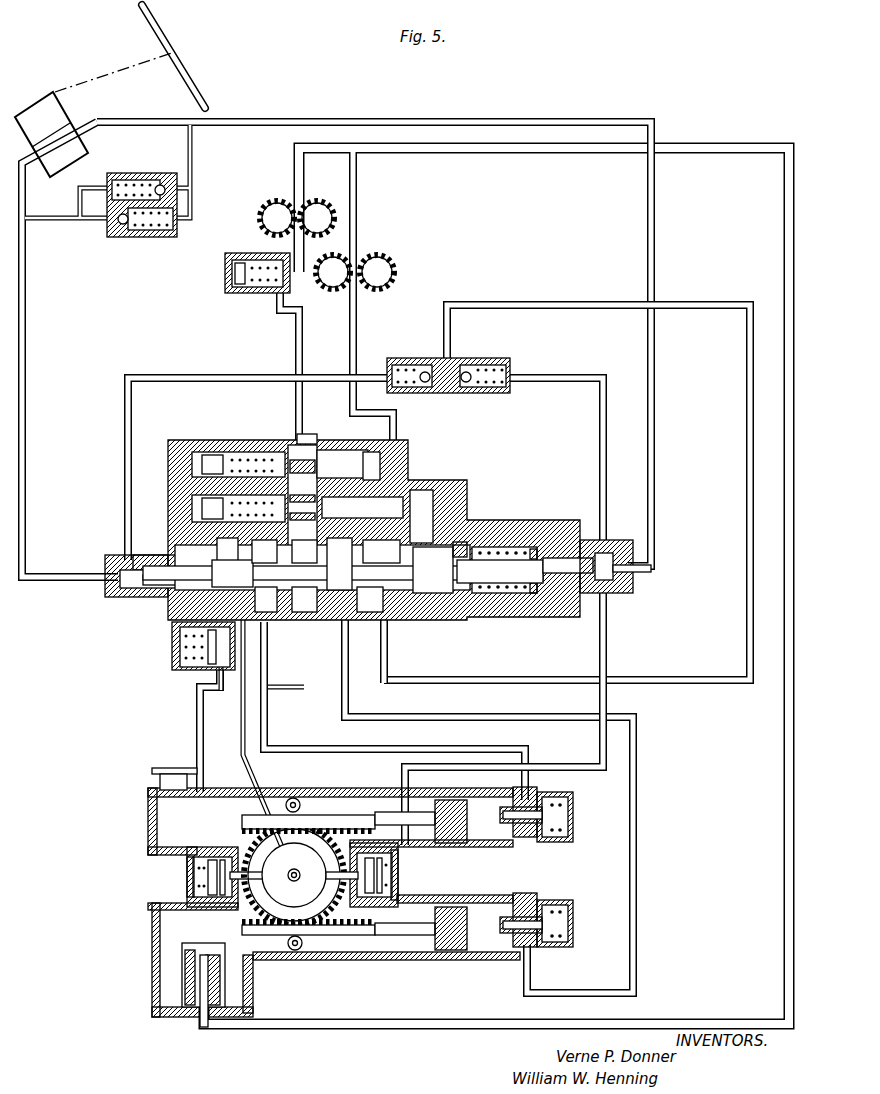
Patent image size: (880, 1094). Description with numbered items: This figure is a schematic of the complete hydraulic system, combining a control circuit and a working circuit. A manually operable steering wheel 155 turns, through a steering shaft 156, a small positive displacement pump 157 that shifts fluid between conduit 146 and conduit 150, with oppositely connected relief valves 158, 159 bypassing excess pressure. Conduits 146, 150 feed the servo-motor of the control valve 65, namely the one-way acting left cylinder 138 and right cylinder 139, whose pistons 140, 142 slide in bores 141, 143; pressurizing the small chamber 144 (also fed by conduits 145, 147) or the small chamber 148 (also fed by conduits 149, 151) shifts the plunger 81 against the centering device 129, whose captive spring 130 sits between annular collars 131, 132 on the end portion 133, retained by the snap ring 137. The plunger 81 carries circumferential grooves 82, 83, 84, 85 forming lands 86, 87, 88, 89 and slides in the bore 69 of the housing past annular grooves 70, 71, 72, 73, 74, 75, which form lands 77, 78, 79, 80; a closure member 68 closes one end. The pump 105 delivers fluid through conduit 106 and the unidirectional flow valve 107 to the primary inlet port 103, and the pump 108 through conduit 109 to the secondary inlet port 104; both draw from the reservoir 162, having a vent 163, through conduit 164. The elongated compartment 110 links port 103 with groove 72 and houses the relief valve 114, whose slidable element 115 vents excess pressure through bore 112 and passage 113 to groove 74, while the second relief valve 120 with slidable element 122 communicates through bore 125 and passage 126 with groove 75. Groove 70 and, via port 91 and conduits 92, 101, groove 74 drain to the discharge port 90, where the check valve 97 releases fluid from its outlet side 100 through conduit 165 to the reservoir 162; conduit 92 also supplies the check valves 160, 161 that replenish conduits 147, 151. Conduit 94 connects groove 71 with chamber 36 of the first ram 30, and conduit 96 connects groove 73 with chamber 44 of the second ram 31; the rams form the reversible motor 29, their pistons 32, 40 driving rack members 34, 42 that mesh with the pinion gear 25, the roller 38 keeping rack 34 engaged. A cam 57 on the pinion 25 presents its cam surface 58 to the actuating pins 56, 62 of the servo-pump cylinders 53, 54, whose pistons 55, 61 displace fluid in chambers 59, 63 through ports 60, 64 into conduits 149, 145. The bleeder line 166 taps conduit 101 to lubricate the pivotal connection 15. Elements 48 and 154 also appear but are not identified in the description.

The pivotal connection 15 is at (111, 897).
The pinion gear 25 is at (352, 927).
The fluid powered reversible motor 29 is at (556, 876).
The first single-acting ram 30 is at (586, 813).
The second single-acting ram 31 is at (586, 916).
The piston 32 is at (468, 812).
The first rack member 34 is at (355, 818).
The chamber 36 is at (506, 842).
The roller 38 is at (300, 800).
The piston 40 is at (299, 950).
The second rack member 42 is at (365, 935).
The chamber 44 is at (490, 950).
The spring 48 is at (571, 968).
The left cylinder 53 is at (408, 885).
The right cylinder 54 is at (182, 896).
The reciprocable piston 55 is at (355, 897).
The actuating pin 56 is at (340, 870).
The cam 57 is at (294, 875).
The cam surface 58 is at (294, 875).
The chamber 59 is at (390, 897).
The port 60 is at (400, 868).
The reciprocable piston 61 is at (213, 858).
The actuating pin 62 is at (232, 880).
The chamber 63 is at (192, 850).
The port 64 is at (188, 872).
The control valve 65 is at (455, 472).
The closure member 68 is at (490, 520).
The longitudinally disposed bore 69 is at (470, 540).
The first annular groove 70 is at (228, 550).
The second annular groove 71 is at (264, 551).
The third annular groove 72 is at (304, 551).
The fourth annular groove 73 is at (350, 545).
The fifth annular groove 74 is at (372, 545).
The sixth annular groove 75 is at (433, 570).
The land 77 is at (266, 599).
The land 78 is at (304, 599).
The land 79 is at (370, 599).
The land 80 is at (425, 612).
The movable valve member or plunger 81 is at (447, 612).
The first circumferential groove 82 is at (232, 573).
The second circumferential groove 83 is at (311, 575).
The third circumferential groove 84 is at (339, 564).
The fourth circumferential groove 85 is at (384, 560).
The land 86 is at (265, 573).
The land 87 is at (305, 612).
The land 88 is at (421, 516).
The land 89 is at (500, 571).
The discharge port 90 is at (221, 690).
The port 91 is at (388, 662).
The laterally extending conduit 92 is at (746, 614).
The conduit 94 is at (266, 638).
The conduit 96 is at (349, 650).
The check valve 97 is at (185, 668).
The outlet side 100 is at (208, 670).
The conduit 101 is at (247, 675).
The primary inlet port 103 is at (305, 434).
The secondary inlet port 104 is at (410, 445).
The pump 105 is at (262, 205).
The conduit 106 is at (295, 346).
The unidirectional flow valve 107 is at (238, 296).
The pump 108 is at (392, 262).
The conduit 109 is at (357, 320).
The elongated compartment 110 is at (288, 448).
The bore 112 is at (337, 443).
The passage 113 is at (405, 475).
The relief valve 114 is at (262, 450).
The slidable element 115 is at (342, 464).
The second relief or check valve 120 is at (230, 470).
The slidable element 122 is at (362, 507).
The bore 125 is at (382, 460).
The passage 126 is at (450, 483).
The centering device 129 is at (500, 550).
The captive spring 130 is at (520, 555).
The annular collar 131 is at (490, 617).
The annular collar 132 is at (522, 617).
The right end portion 133 is at (500, 617).
The head or snap ring 137 is at (548, 617).
The one-way acting left cylinder 138 is at (110, 555).
The one-way acting right cylinder 139 is at (641, 587).
The piston 140 is at (148, 558).
The bore 141 is at (160, 590).
The piston 142 is at (585, 540).
The bore 143 is at (570, 617).
The small chamber 144 is at (105, 597).
The conduit 145 is at (127, 663).
The conduit 146 is at (27, 270).
The conduit 147 is at (125, 480).
The small chamber 148 is at (615, 540).
The conduit 149 is at (607, 624).
The conduit 150 is at (275, 120).
The conduit 151 is at (600, 460).
The port 154 is at (470, 612).
The steering wheel 155 is at (176, 52).
The steering shaft 156 is at (125, 84).
The positive displacement pump 157 is at (53, 90).
The relief valve 158 is at (133, 172).
The relief valve 159 is at (155, 240).
The check valve 160 is at (405, 358).
The check valve 161 is at (500, 358).
The reservoir 162 is at (174, 980).
The vent 163 is at (148, 766).
The conduit 164 is at (295, 168).
The conduit 165 is at (197, 748).
The bleeder line 166 is at (250, 780).